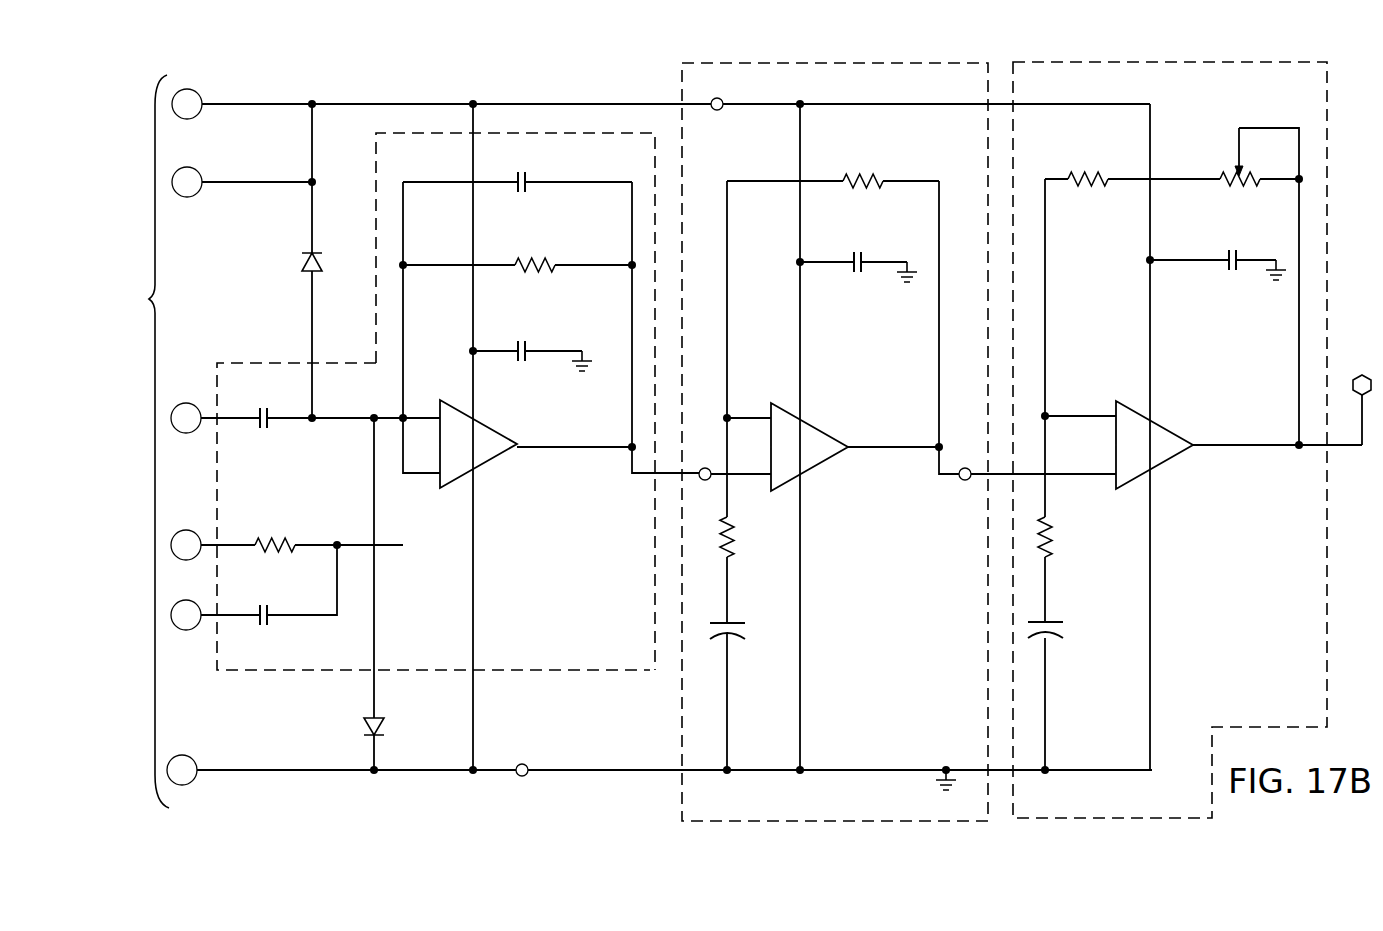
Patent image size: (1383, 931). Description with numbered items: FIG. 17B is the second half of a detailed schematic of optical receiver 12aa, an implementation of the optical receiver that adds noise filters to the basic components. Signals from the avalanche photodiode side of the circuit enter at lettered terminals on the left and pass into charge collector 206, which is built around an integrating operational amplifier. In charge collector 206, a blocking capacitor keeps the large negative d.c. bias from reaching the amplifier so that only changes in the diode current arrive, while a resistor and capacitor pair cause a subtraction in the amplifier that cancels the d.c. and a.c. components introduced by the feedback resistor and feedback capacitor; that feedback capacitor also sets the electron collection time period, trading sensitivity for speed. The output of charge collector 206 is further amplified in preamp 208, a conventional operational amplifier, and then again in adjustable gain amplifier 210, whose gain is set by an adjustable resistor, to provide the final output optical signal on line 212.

The optical receiver 12aa is at (480, 23).
The charge collector circuit 206 is at (567, 118).
The preamp 208 is at (777, 63).
The adjustable gain amplifier 210 is at (1190, 62).
The line 212 is at (1350, 448).